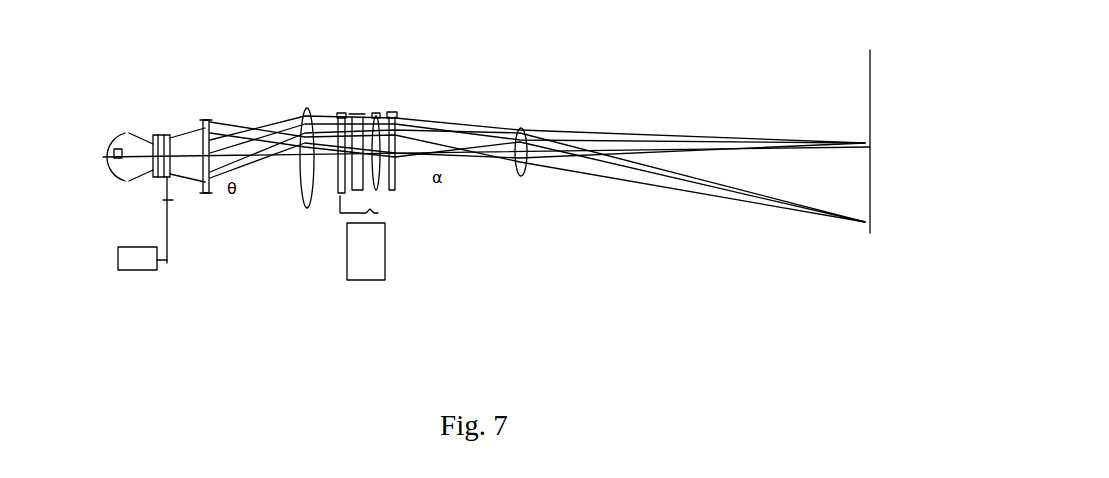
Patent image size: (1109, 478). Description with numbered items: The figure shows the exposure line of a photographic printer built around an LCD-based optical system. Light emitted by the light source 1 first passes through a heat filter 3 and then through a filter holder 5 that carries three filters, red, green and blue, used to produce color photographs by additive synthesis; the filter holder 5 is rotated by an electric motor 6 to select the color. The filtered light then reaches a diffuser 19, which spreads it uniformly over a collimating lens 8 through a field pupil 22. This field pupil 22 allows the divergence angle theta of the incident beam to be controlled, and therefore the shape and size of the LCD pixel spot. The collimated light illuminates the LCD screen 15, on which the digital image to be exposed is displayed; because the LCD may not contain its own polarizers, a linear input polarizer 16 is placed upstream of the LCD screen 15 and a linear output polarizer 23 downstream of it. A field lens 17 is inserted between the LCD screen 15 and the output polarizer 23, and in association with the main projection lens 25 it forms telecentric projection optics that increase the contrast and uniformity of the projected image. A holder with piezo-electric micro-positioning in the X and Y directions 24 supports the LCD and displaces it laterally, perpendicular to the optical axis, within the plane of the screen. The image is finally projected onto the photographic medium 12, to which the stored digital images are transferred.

The light source 1 is at (117, 137).
The heat filter 3 is at (157, 133).
The filter holder 5 is at (174, 220).
The electric motor 6 is at (145, 270).
The collimating lens 8 is at (308, 106).
The photographic medium 12 is at (871, 84).
The LCD screen 15 is at (357, 113).
The linear input polarizer 16 is at (341, 113).
The field lens 17 is at (377, 112).
The diffuser 19 is at (197, 128).
The field pupil 22 is at (207, 118).
The linear output polarizer 23 is at (396, 112).
The holder with piezo-electric micro-positioning 24 is at (378, 280).
The main projection lens 25 is at (520, 127).